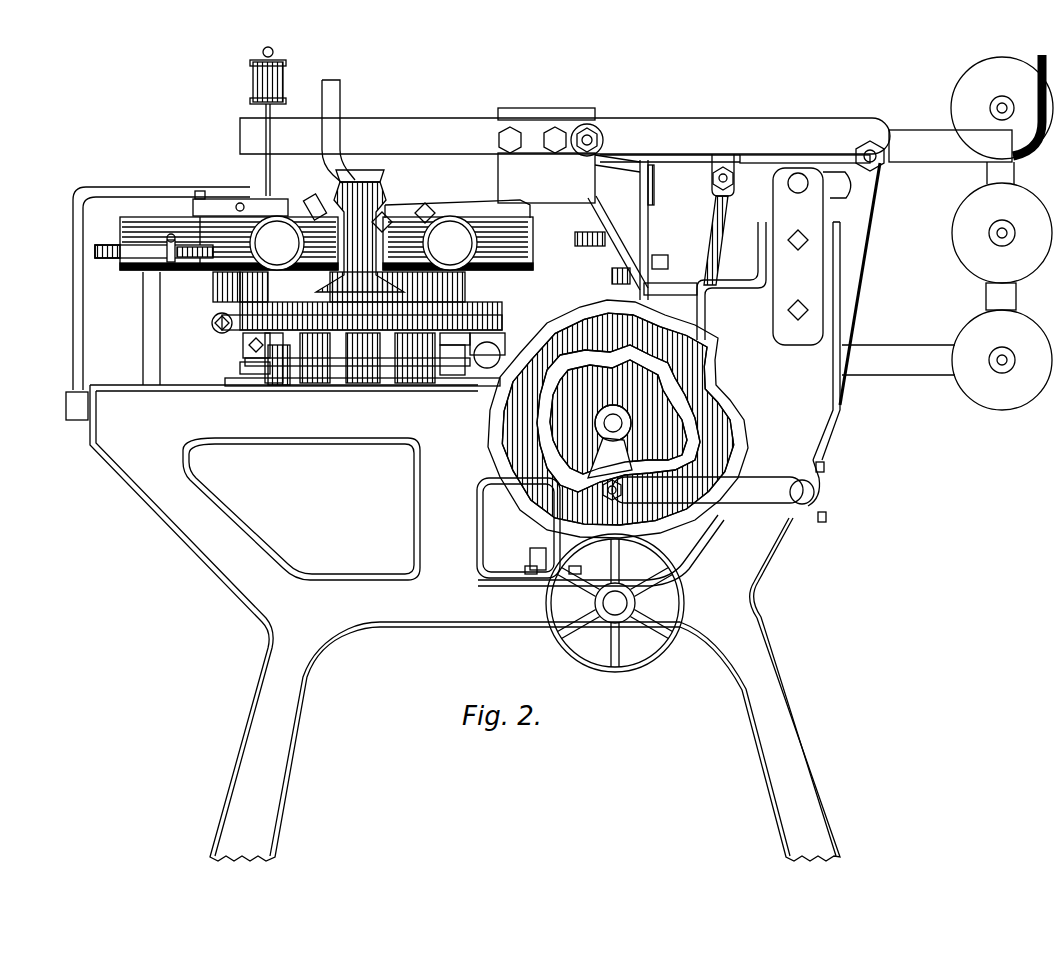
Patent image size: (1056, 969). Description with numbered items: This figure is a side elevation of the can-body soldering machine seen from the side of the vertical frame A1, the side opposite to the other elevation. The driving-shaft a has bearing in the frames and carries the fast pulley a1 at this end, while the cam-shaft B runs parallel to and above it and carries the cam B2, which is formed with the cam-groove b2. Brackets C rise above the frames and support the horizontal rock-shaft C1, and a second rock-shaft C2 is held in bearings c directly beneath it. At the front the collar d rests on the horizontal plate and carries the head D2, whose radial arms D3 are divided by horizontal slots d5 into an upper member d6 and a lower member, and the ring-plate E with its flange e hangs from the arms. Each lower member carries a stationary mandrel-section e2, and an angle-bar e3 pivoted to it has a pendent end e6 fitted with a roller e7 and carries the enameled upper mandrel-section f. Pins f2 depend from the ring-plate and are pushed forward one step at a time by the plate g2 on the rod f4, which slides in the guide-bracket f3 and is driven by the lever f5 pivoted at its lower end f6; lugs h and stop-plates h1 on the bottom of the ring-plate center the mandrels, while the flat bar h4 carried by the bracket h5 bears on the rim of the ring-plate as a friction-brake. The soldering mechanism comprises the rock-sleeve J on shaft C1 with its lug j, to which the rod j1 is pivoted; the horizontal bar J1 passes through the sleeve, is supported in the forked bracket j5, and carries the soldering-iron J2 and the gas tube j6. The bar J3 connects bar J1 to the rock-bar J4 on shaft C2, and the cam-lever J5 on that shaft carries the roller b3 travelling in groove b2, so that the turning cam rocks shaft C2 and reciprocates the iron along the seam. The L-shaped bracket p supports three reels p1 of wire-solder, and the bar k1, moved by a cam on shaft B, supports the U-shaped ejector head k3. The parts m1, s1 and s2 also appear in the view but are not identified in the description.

The vertical frame A1 is at (160, 477).
The horizontal bar J1 is at (455, 132).
The rock-sleeve J is at (770, 155).
The soldering-iron J2 is at (569, 155).
The bar J3 is at (818, 135).
The rock-bar J4 is at (860, 256).
The cam-lever J5 is at (760, 497).
The lug j is at (722, 163).
The rod j1 is at (716, 246).
The forked bracket j5 is at (341, 106).
The tube j6 is at (1037, 89).
The spool m1 is at (252, 82).
The bracket C is at (740, 310).
The rock-shaft C1 is at (796, 187).
The rock-shaft C2 is at (812, 501).
The bearing c is at (784, 522).
The cam-shaft B is at (617, 424).
The cam B2 is at (680, 404).
The cam-groove b2 is at (737, 456).
The roller b3 is at (625, 490).
The driving-shaft a is at (628, 603).
The fast pulley a1 is at (642, 662).
The L-shaped bracket p is at (920, 358).
The reel p1 is at (970, 258).
The upper mandrel-section f is at (257, 244).
The depending pin f2 is at (432, 374).
The guide-bracket f3 is at (282, 382).
The rod f4 is at (255, 370).
The lever f5 is at (540, 537).
The lower end f6 is at (548, 557).
The horizontal flange e is at (465, 320).
The stationary mandrel-section e2 is at (276, 265).
The angle-bar e3 is at (420, 284).
The pendent end e6 is at (397, 374).
The roller e7 is at (330, 382).
The ring-plate E is at (484, 318).
The plate g2 is at (505, 343).
The link s1 is at (612, 242).
The link end s2 is at (620, 287).
The collar d is at (358, 372).
The slot d5 is at (384, 214).
The upper member d6 is at (318, 200).
The head D2 is at (402, 206).
The radial arm D3 is at (226, 206).
The bar k1 is at (158, 318).
The U-shaped head k3 is at (113, 254).
The lug h is at (236, 331).
The stop-plate h1 is at (243, 343).
The flat bar h4 is at (212, 323).
The bracket h5 is at (222, 372).